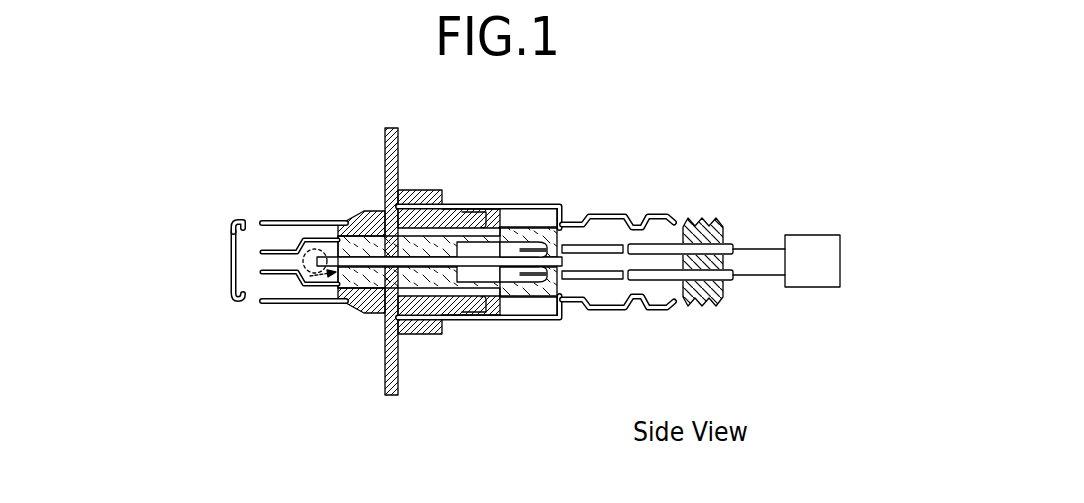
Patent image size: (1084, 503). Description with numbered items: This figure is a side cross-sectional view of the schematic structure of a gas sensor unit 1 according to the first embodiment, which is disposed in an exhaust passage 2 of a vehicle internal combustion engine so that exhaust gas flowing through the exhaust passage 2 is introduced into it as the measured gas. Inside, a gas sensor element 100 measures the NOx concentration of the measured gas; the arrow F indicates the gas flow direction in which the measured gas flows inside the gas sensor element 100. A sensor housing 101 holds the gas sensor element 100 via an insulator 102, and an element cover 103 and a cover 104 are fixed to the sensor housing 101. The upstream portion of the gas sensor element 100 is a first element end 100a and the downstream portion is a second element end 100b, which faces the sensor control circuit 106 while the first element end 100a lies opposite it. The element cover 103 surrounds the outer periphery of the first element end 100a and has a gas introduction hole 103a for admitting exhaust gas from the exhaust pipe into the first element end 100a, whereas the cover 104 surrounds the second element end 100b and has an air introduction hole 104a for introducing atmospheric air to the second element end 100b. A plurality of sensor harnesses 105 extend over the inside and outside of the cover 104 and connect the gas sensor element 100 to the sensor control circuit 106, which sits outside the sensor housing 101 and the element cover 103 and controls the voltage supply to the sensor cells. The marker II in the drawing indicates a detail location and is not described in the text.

The gas sensor unit 1 is at (504, 261).
The exhaust passage 2 is at (399, 140).
The gas sensor element 100 is at (357, 252).
The first element end 100a is at (326, 246).
The second element end 100b is at (498, 322).
The sensor housing 101 is at (428, 178).
The insulator 102 is at (523, 220).
The element cover 103 is at (233, 300).
The gas introduction hole 103a is at (229, 230).
The cover 104 is at (547, 321).
The air introduction hole 104a is at (673, 308).
The sensor harnesses 105 is at (747, 247).
The sensor control circuit 106 is at (823, 235).
The section line II is at (300, 284).
The gas flow direction F is at (337, 292).